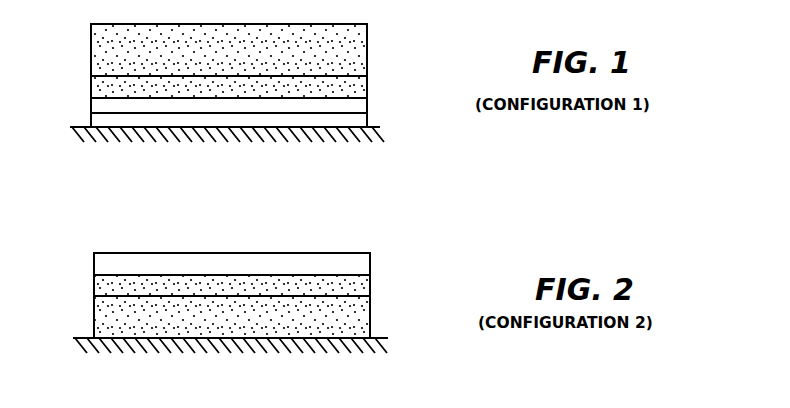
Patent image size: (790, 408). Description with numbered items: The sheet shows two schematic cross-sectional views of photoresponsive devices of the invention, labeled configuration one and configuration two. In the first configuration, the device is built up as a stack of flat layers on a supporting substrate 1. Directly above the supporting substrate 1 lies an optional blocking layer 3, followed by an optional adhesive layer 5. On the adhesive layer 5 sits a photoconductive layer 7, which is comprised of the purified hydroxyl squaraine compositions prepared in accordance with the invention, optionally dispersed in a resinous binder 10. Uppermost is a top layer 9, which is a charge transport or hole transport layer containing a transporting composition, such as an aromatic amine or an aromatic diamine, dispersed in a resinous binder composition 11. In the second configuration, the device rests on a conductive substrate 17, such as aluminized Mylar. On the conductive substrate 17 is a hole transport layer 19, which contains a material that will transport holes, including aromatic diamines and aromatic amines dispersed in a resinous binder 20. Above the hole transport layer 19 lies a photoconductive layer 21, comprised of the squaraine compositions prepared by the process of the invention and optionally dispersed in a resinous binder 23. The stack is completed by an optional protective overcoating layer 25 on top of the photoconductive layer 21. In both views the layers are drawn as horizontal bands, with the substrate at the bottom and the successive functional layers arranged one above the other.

In FIG. 1, the supporting substrate 1 is at (373, 131).
In FIG. 1, the blocking layer 3 is at (360, 119).
In FIG. 1, the adhesive layer 5 is at (357, 104).
In FIG. 1, the photoconductive layer 7 is at (355, 88).
In FIG. 1, the top layer 9 is at (360, 43).
In FIG. 1, the resinous binder 10 is at (105, 87).
In FIG. 1, the resinous binder composition 11 is at (98, 43).
In FIG. 2, the conductive substrate 17 is at (367, 343).
In FIG. 2, the hole transport layer 19 is at (362, 315).
In FIG. 2, the resinous binder 20 is at (100, 317).
In FIG. 2, the photoconductive layer 21 is at (357, 287).
In FIG. 2, the resinous binder 23 is at (100, 284).
In FIG. 2, the protective overcoating layer 25 is at (357, 263).